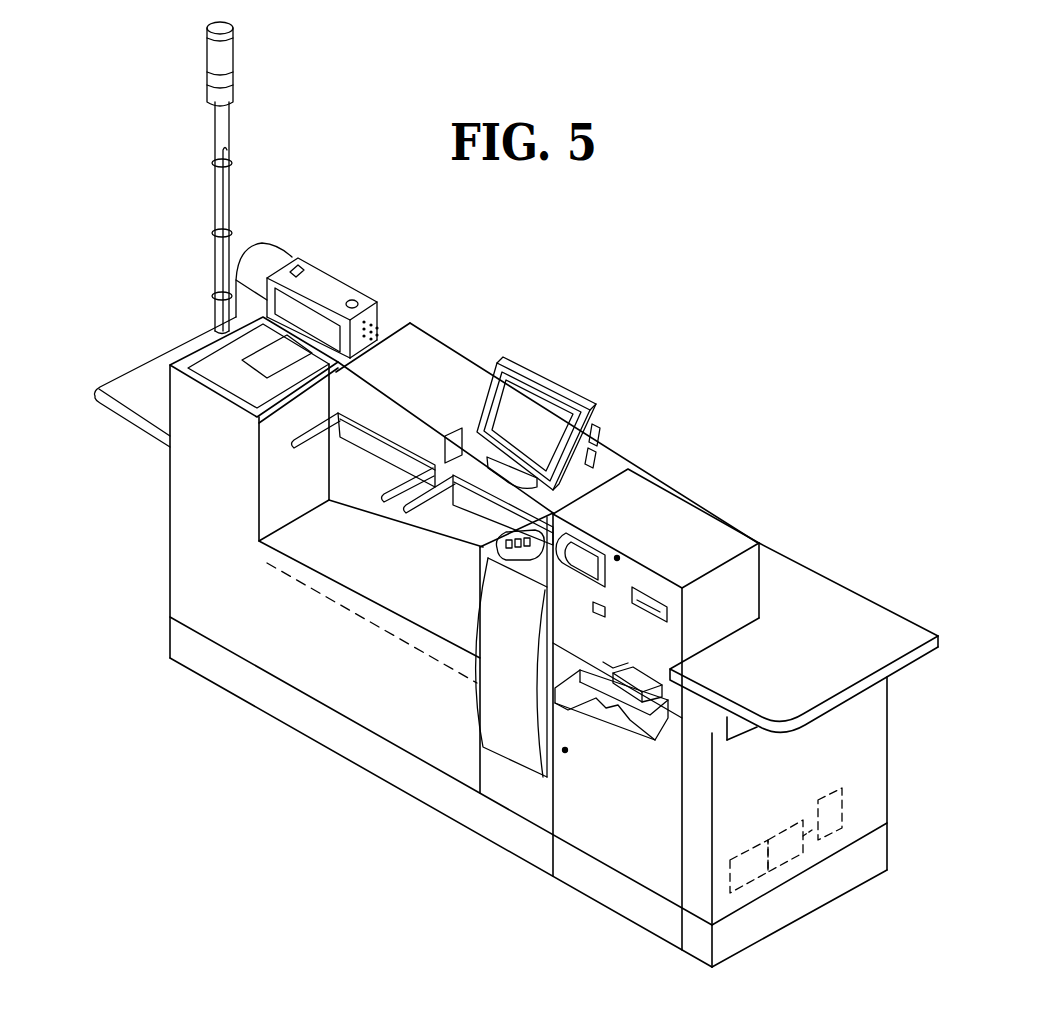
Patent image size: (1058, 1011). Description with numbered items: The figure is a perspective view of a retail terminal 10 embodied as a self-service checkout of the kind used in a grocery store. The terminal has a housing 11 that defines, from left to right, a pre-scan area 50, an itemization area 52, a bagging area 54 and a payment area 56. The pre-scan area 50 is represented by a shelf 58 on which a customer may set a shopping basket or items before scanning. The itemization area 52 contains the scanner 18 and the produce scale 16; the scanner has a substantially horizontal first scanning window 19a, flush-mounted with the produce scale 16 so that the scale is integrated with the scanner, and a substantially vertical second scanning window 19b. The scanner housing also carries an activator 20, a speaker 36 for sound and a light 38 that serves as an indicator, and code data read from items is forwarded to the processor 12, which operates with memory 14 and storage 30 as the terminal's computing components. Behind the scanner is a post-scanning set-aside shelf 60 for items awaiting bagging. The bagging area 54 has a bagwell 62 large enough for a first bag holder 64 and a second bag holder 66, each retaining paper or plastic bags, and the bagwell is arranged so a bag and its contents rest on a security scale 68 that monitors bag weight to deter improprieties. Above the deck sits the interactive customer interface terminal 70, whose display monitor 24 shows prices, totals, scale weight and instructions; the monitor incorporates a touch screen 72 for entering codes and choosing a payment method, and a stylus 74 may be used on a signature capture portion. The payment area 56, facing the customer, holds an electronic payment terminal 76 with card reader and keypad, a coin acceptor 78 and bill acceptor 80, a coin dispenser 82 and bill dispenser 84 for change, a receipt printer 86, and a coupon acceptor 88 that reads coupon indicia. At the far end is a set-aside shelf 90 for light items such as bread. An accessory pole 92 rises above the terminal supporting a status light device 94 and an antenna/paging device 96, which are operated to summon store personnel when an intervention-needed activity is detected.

The retail terminal 10 is at (672, 278).
The housing 11 is at (170, 557).
The processor 12 is at (748, 878).
The memory 14 is at (787, 850).
The produce scale 16 is at (252, 394).
The scanner 18 is at (230, 350).
The first scanning window 19a is at (252, 358).
The second scanning window 19b is at (302, 312).
The activator 20 is at (300, 258).
The display monitor 24 is at (515, 405).
The storage 30 is at (842, 835).
The speaker 36 is at (384, 318).
The light 38 is at (358, 302).
The pre-scan area 50 is at (90, 232).
The itemization area 52 is at (410, 246).
The bagging area 54 is at (333, 688).
The payment area 56 is at (605, 840).
The shelf 58 is at (110, 387).
The set-aside shelf 60 is at (453, 375).
The bagwell 62 is at (318, 548).
The first bag holder 64 is at (290, 503).
The second bag holder 66 is at (445, 542).
The security scale 68 is at (310, 578).
The interactive customer interface terminal 70 is at (612, 406).
The touch screen 72 is at (547, 423).
The stylus 74 is at (597, 443).
The electronic payment terminal 76 is at (488, 548).
The coin acceptor 78 is at (604, 558).
The bill acceptor 80 is at (650, 680).
The coin dispenser 82 is at (577, 563).
The bill dispenser 84 is at (650, 728).
The receipt printer 86 is at (523, 590).
The coupon acceptor 88 is at (650, 598).
The set-aside shelf 90 is at (862, 625).
The accessory pole 92 is at (215, 193).
The status light device 94 is at (238, 66).
The antenna/paging device 96 is at (232, 215).